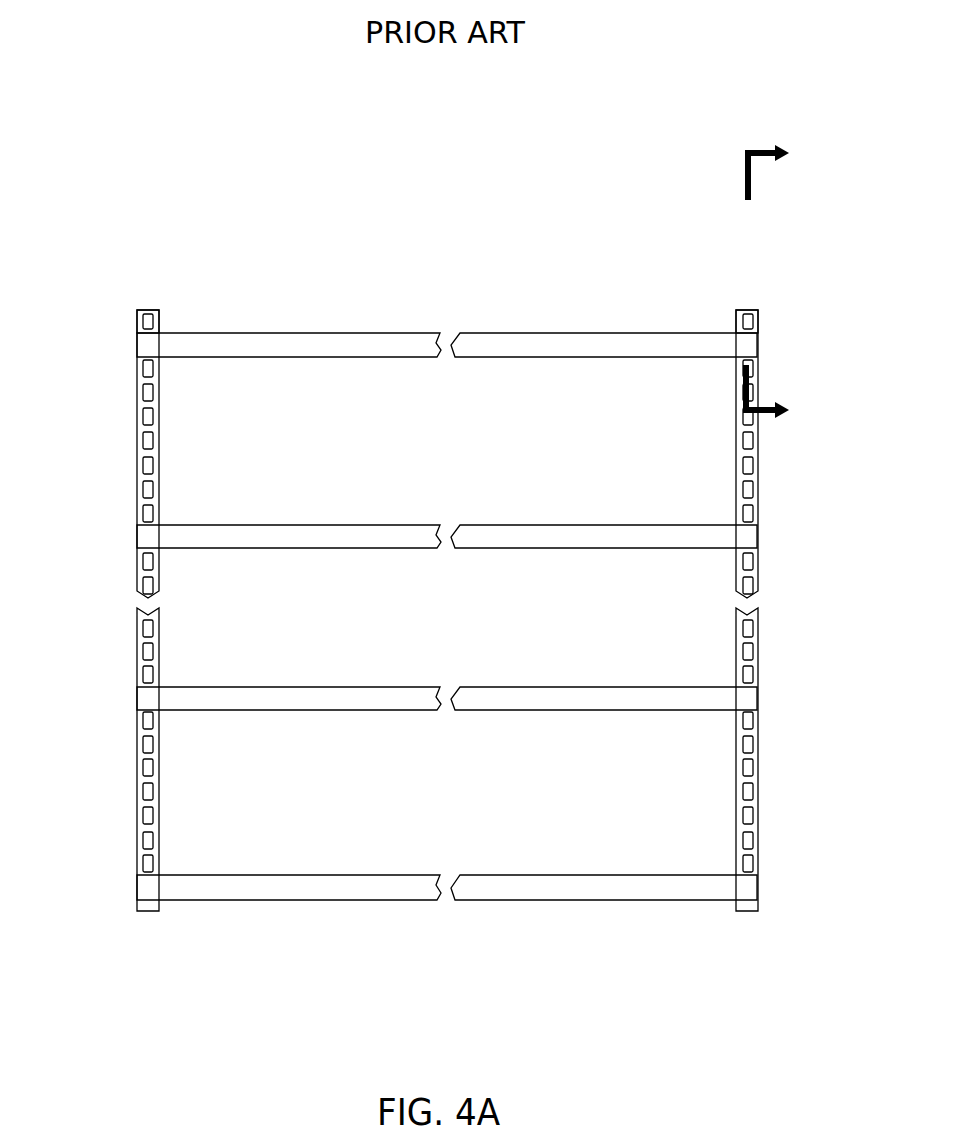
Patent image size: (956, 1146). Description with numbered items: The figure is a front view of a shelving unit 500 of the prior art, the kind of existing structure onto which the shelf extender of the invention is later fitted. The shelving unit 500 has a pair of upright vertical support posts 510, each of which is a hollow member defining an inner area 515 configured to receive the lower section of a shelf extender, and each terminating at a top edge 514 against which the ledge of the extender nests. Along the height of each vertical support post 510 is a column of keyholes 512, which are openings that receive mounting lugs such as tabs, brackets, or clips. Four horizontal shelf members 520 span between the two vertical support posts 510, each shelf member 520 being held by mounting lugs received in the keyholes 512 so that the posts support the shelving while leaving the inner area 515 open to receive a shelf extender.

The shelving unit 500 is at (156, 80).
The vertical support post 510 is at (132, 319).
The keyhole 512 is at (145, 415).
The top edge 514 is at (154, 306).
The inner area 515 is at (145, 305).
The shelf member 520 is at (528, 332).